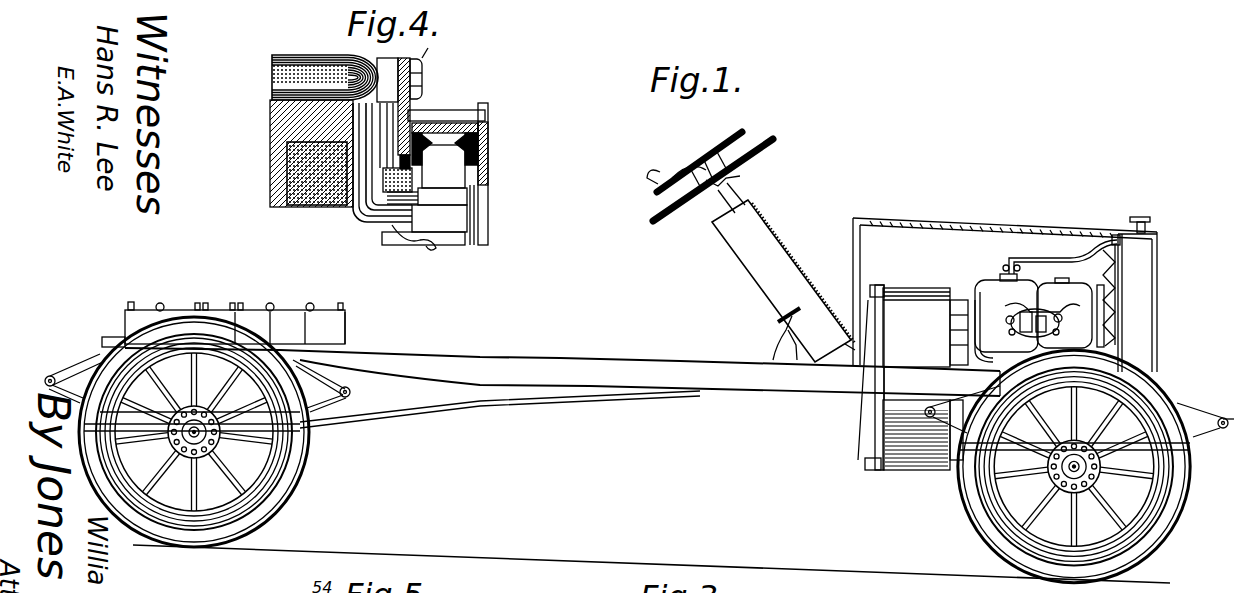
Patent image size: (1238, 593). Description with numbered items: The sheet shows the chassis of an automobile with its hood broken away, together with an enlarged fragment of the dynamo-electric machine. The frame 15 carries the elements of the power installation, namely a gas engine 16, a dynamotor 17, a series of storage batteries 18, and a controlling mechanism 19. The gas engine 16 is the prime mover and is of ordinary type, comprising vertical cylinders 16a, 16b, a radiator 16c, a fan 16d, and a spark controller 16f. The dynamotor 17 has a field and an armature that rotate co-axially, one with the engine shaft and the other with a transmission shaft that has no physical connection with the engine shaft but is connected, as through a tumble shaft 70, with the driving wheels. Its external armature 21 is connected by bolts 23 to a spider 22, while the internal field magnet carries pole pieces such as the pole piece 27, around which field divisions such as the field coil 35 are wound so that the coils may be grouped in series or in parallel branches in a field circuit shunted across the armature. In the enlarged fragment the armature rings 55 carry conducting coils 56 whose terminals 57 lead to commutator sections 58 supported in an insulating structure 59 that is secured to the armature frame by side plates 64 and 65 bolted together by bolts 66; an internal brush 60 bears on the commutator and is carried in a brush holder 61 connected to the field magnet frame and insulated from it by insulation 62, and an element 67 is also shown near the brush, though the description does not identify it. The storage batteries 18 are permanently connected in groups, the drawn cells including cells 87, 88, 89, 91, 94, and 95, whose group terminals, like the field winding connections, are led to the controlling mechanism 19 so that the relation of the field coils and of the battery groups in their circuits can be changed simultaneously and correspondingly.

In FIG. 1, the frame 15 is at (578, 365).
In FIG. 1, the gas engine 16 is at (1060, 254).
In FIG. 1, the vertical cylinder 16a is at (1025, 293).
In FIG. 1, the vertical cylinder 16b is at (1080, 281).
In FIG. 1, the radiator 16c is at (1153, 264).
In FIG. 1, the fan 16d is at (1117, 286).
In FIG. 1, the spark controller 16f is at (665, 172).
In FIG. 4, the dynamotor 17 is at (433, 75).
In FIG. 1, the dynamotor 17 is at (920, 292).
In FIG. 1, the storage batteries 18 is at (258, 309).
In FIG. 1, the controlling mechanism 19 is at (773, 234).
In FIG. 4, the external armature 21 is at (296, 56).
In FIG. 1, the spider 22 is at (871, 372).
In FIG. 1, the bolts 23 is at (876, 290).
In FIG. 4, the pole piece 27 is at (311, 153).
In FIG. 4, the field coil 35 is at (285, 176).
In FIG. 4, the armature rings 55 is at (312, 62).
In FIG. 4, the conducting coils 56 is at (384, 64).
In FIG. 4, the coil terminals 57 is at (405, 62).
In FIG. 4, the commutator sections 58 is at (445, 155).
In FIG. 4, the insulating structure 59 is at (490, 127).
In FIG. 4, the internal brush 60 is at (462, 200).
In FIG. 4, the brush holder 61 is at (458, 222).
In FIG. 4, the insulation 62 is at (352, 214).
In FIG. 4, the side plate 64 is at (430, 45).
In FIG. 4, the side plate 65 is at (490, 174).
In FIG. 4, the bolts 66 is at (468, 110).
In FIG. 4, the wire 67 is at (420, 248).
In FIG. 1, the tumble shaft 70 is at (525, 406).
In FIG. 1, the storage cell 87 is at (252, 328).
In FIG. 1, the storage cell 88 is at (292, 328).
In FIG. 1, the storage cell 89 is at (329, 328).
In FIG. 1, the storage cell 91 is at (216, 310).
In FIG. 1, the storage cell 94 is at (150, 297).
In FIG. 1, the storage cell 95 is at (178, 310).